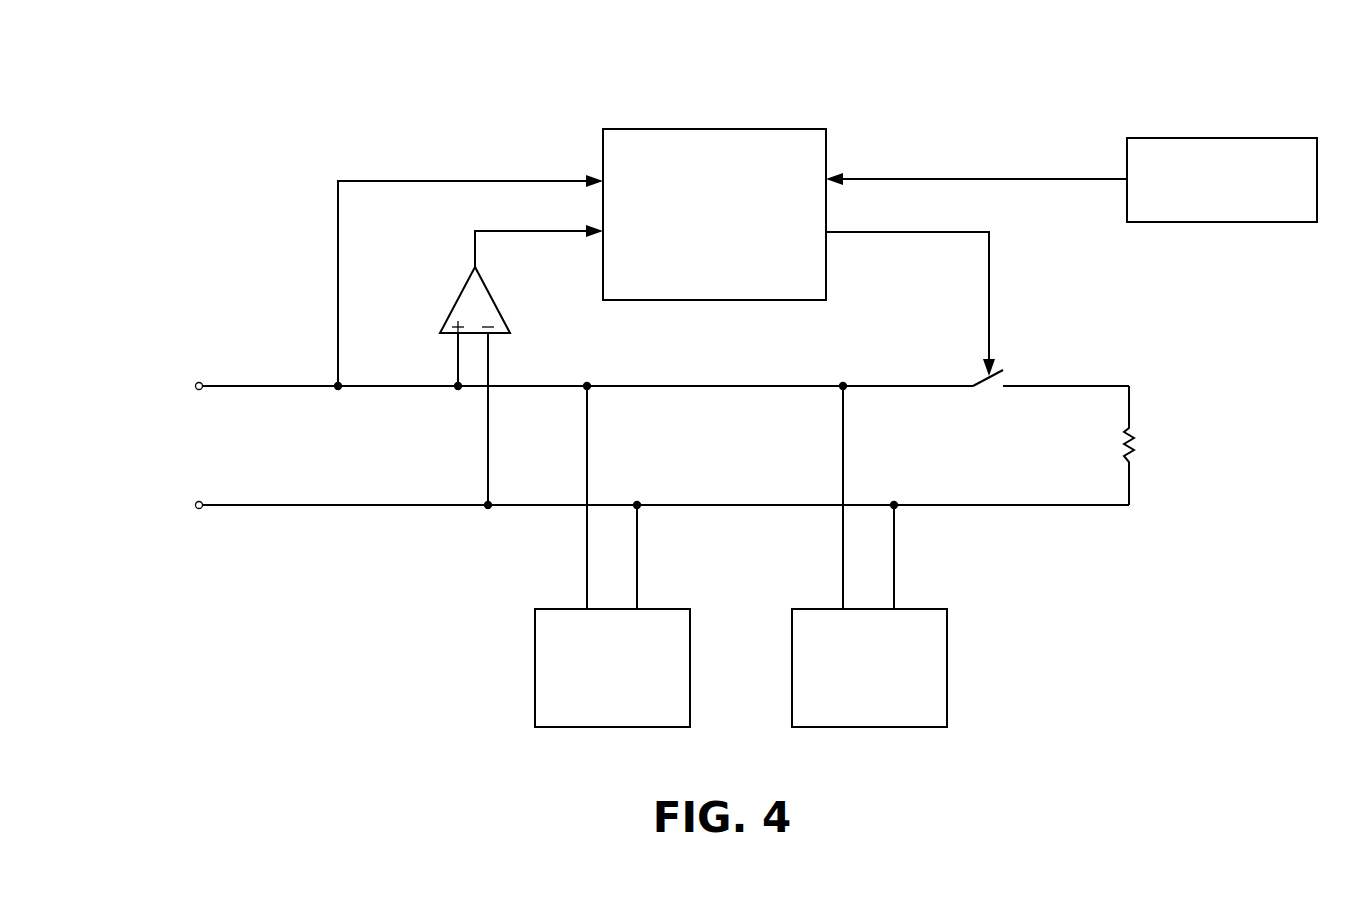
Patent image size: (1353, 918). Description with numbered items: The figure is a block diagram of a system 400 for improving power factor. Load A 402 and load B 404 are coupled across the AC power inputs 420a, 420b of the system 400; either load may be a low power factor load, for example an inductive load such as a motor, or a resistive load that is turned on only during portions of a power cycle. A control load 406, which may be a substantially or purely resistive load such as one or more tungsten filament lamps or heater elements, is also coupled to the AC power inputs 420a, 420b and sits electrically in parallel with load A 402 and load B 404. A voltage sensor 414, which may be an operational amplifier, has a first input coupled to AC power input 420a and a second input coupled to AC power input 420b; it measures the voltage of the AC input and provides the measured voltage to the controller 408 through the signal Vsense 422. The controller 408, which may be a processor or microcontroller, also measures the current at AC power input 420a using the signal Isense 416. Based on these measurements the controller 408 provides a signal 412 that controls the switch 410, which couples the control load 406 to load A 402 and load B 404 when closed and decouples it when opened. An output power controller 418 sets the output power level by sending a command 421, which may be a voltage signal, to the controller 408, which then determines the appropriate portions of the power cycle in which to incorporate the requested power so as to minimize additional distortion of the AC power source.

The system 400 is at (136, 76).
The load A 402 is at (552, 608).
The load B 404 is at (805, 608).
The control load 406 is at (1133, 428).
The controller 408 is at (625, 128).
The switch 410 is at (978, 384).
The signal 412 is at (990, 250).
The voltage sensor 414 is at (463, 290).
The signal Isense 416 is at (470, 180).
The output power controller 418 is at (1198, 137).
The AC power input 420a is at (197, 381).
The AC power input 420b is at (197, 509).
The command 421 is at (1012, 178).
The signal Vsense 422 is at (546, 233).